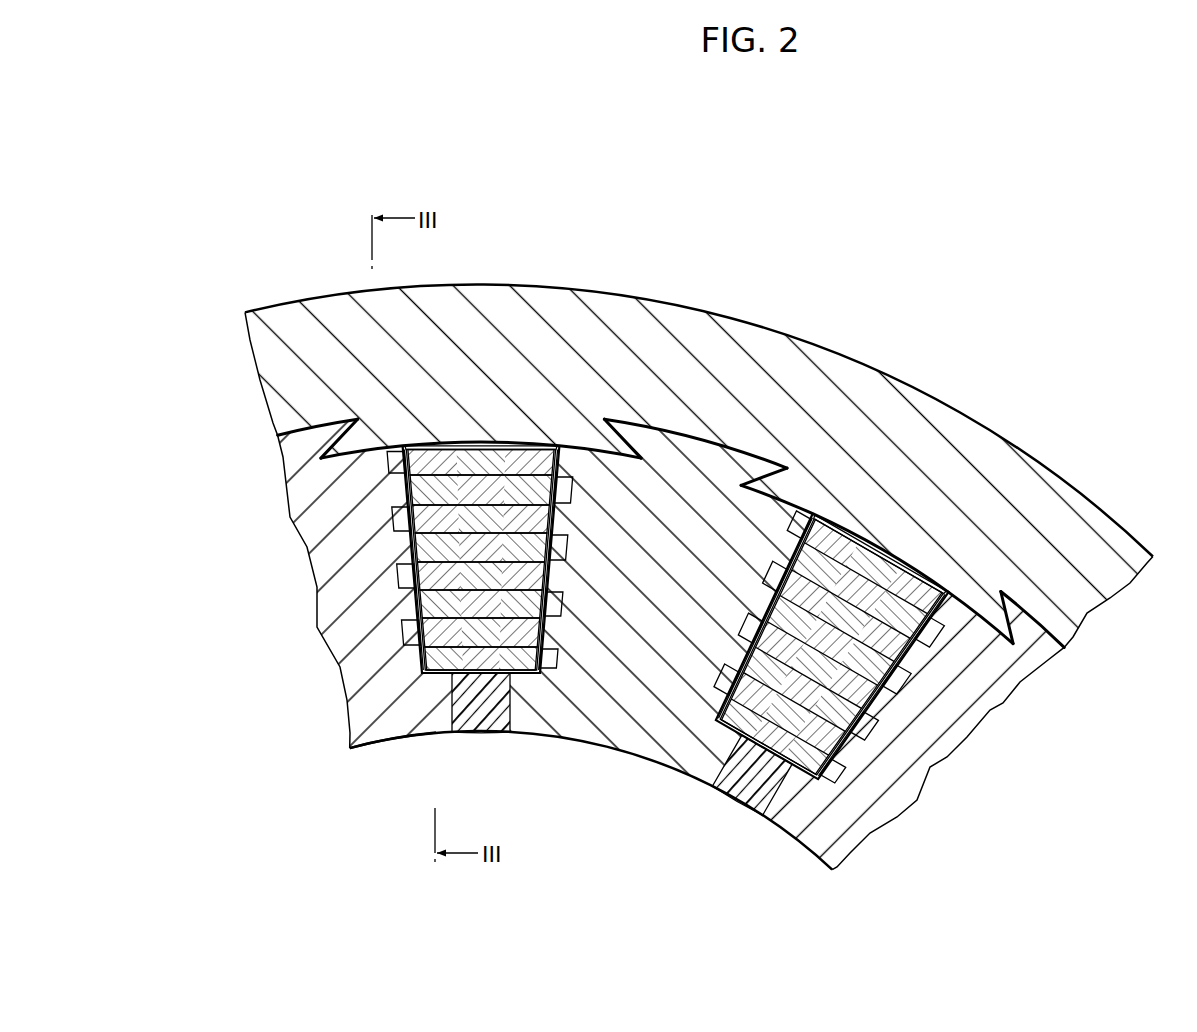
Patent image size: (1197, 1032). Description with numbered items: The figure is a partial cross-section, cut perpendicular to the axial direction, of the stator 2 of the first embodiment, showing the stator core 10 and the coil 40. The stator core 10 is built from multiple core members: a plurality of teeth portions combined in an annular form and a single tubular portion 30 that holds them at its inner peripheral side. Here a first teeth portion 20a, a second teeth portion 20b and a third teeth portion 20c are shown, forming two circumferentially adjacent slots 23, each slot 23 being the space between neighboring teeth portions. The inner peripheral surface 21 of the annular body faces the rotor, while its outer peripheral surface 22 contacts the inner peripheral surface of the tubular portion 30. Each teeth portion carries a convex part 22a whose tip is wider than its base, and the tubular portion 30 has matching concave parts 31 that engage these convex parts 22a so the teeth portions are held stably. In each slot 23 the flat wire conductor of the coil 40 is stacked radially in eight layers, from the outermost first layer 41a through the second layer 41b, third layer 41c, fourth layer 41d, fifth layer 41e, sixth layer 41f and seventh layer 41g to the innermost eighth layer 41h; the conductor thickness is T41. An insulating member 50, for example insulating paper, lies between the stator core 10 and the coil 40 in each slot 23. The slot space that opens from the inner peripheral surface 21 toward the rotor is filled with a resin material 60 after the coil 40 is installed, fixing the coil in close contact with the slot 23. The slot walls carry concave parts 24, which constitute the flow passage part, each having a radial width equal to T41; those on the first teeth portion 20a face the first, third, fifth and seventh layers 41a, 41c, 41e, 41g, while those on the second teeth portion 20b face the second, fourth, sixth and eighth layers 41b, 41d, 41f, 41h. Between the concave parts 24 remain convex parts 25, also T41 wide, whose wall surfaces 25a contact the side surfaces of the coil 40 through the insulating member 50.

The stator 2 is at (893, 250).
The stator core 10 is at (699, 572).
The first teeth portion 20a is at (355, 713).
The second teeth portion 20b is at (640, 742).
The third teeth portion 20c is at (821, 840).
The inner peripheral surface 21 is at (400, 735).
The outer peripheral surface 22 is at (988, 590).
The convex part 22a is at (330, 440).
The slot 23 is at (543, 690).
The concave part 24 is at (568, 545).
The convex part 25 is at (567, 482).
The wall surface 25a is at (563, 585).
The tubular portion 30 is at (935, 440).
The concave part 31 is at (303, 430).
The coil 40 is at (542, 657).
The first layer 41a is at (392, 460).
The second layer 41b is at (430, 490).
The third layer 41c is at (400, 518).
The fourth layer 41d is at (432, 547).
The fifth layer 41e is at (405, 575).
The sixth layer 41f is at (435, 604).
The seventh layer 41g is at (412, 632).
The eighth layer 41h is at (437, 660).
The insulating member 50 is at (487, 445).
The resin material 60 is at (483, 735).
The thickness of the flat wire conductor T41 is at (452, 405).